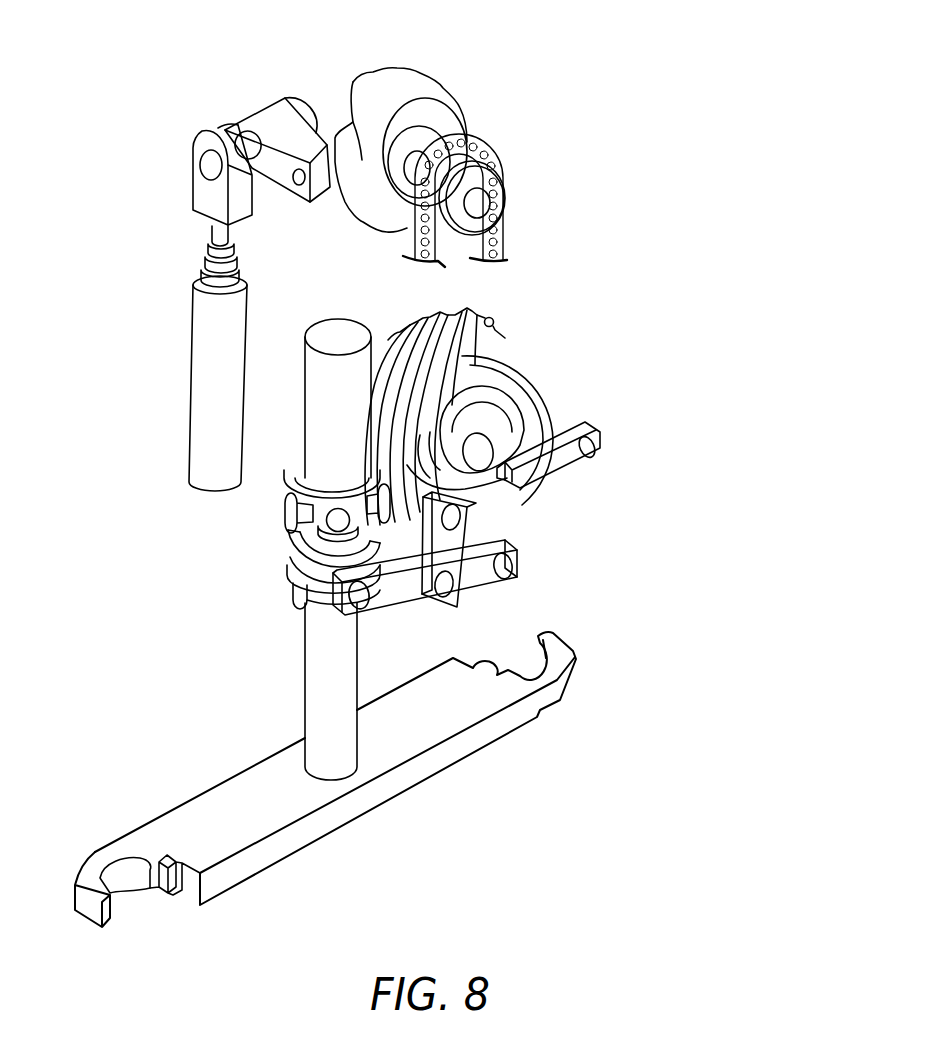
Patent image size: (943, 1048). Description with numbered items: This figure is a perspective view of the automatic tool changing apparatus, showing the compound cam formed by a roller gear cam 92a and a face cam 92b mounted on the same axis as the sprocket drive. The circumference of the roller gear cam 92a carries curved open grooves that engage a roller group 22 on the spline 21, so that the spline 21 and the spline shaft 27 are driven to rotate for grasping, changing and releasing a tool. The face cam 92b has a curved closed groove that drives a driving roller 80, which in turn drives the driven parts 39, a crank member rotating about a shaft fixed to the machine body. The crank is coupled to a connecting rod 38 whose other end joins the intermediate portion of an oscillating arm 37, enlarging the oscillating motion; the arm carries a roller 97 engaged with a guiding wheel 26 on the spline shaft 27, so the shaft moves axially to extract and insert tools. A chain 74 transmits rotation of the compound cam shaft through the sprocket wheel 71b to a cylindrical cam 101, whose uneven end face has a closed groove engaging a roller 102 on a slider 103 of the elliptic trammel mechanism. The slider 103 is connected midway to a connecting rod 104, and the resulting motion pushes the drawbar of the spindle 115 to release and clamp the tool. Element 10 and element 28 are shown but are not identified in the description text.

The clevis 10 is at (208, 198).
The spline 21 is at (317, 402).
The roller group 22 is at (328, 522).
The guiding wheel 26 is at (300, 593).
The spline shaft 27 is at (314, 667).
The base plate 28 is at (500, 692).
The oscillating arm 37 is at (407, 593).
The connecting rod 38 is at (455, 552).
The driven parts 39 is at (547, 468).
The sprocket wheel 71b is at (500, 157).
The chain 74 is at (505, 258).
The driving roller 80 is at (477, 480).
The roller gear cam 92a is at (503, 338).
The face cam 92b is at (518, 392).
The roller 97 is at (345, 584).
The cylindrical cam 101 is at (453, 117).
The roller 102 is at (333, 137).
The slider 103 is at (282, 138).
The connecting rod 104 is at (235, 122).
The drawbar of spindle 115 is at (213, 333).